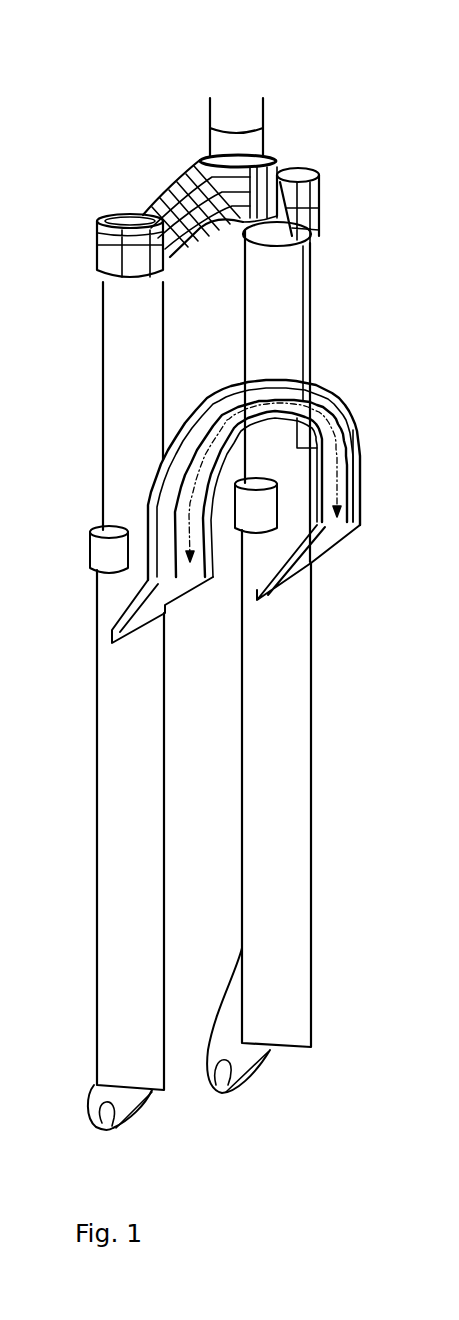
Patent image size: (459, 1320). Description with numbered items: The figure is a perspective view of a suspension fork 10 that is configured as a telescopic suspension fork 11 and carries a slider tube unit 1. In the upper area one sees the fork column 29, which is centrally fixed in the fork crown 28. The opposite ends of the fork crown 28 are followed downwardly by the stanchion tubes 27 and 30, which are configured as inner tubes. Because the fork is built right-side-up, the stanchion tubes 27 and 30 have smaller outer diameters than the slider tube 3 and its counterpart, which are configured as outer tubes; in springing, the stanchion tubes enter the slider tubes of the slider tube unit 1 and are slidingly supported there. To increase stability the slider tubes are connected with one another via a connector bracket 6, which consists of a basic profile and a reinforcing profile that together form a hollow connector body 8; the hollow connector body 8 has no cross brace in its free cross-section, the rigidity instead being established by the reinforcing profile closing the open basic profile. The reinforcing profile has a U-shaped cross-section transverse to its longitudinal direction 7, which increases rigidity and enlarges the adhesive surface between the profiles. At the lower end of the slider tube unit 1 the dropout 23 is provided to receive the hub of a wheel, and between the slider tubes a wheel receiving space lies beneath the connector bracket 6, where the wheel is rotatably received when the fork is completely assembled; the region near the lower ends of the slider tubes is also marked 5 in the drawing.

The slider tube unit 1 is at (285, 481).
The slider tube 3 is at (458, 755).
The lower fork legs with dropouts 5 is at (192, 968).
The connector bracket 6 is at (232, 393).
The longitudinal direction 7 is at (338, 438).
The hollow connector body 8 is at (345, 482).
The suspension fork 10 is at (328, 80).
The telescopic suspension fork 11 is at (372, 120).
The dropout 23 is at (458, 1045).
The stanchion tube 27 is at (115, 341).
The fork crown 28 is at (152, 150).
The fork column 29 is at (220, 100).
The stanchion tube 30 is at (272, 312).